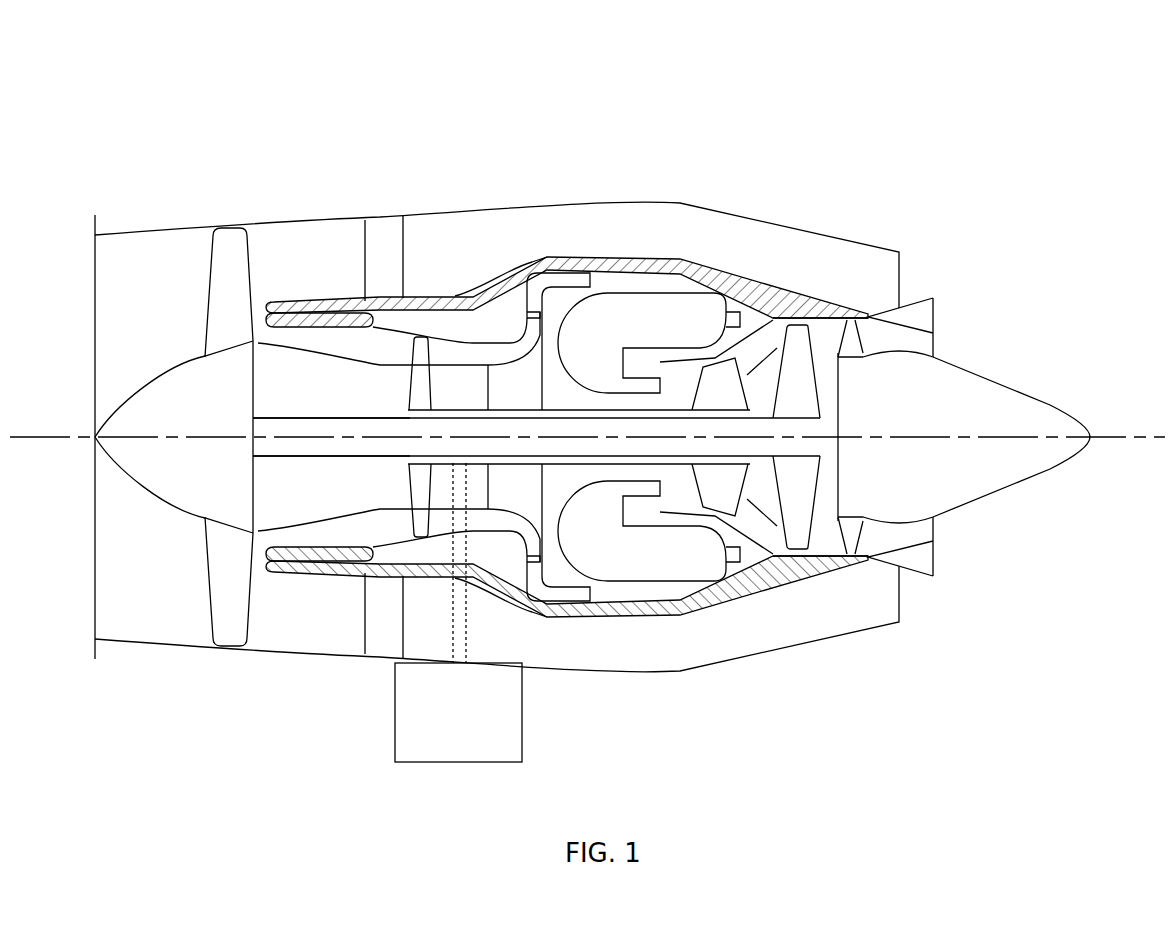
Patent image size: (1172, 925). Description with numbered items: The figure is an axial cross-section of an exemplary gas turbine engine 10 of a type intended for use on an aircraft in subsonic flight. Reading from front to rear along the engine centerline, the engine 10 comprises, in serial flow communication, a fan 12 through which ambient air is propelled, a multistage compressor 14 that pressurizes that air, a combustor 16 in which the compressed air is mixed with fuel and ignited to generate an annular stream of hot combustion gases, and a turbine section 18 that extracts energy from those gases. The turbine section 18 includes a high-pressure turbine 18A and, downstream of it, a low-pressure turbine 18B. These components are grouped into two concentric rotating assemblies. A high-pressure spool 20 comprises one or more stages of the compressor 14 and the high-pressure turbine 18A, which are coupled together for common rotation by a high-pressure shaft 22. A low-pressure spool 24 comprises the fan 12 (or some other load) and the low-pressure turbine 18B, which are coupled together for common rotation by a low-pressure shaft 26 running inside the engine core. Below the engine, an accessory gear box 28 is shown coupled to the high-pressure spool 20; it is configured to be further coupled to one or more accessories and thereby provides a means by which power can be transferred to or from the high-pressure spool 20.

The gas turbine engine 10 is at (777, 157).
The fan 12 is at (227, 572).
The multistage compressor 14 is at (473, 357).
The combustor 16 is at (642, 312).
The turbine section 18 is at (762, 497).
The high-pressure turbine 18A is at (723, 498).
The low-pressure turbine 18B is at (797, 513).
The high-pressure spool 20 is at (567, 460).
The high-pressure shaft 22 is at (567, 460).
The low-pressure spool 24 is at (332, 455).
The low-pressure shaft 26 is at (332, 455).
The accessory gear box 28 is at (422, 703).